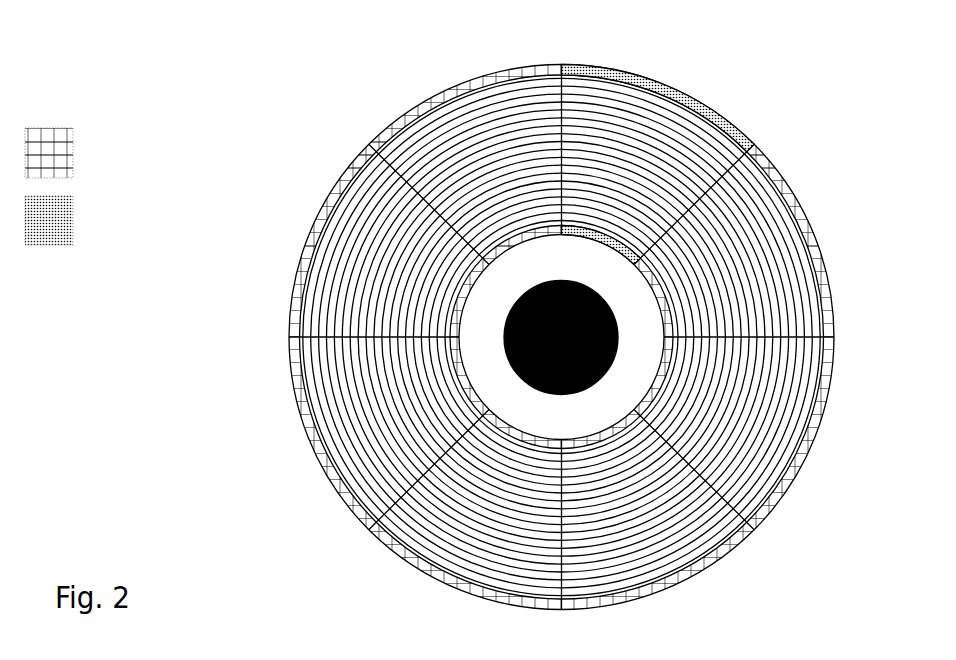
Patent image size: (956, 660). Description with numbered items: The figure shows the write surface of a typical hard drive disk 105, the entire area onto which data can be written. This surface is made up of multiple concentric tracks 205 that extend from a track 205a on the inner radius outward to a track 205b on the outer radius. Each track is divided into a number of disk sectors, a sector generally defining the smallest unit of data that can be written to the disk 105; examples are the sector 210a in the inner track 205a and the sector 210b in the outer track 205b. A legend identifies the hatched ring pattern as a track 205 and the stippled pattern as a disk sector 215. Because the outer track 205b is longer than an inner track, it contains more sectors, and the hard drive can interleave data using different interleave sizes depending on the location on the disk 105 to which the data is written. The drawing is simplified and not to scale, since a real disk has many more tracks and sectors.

The disk 105 is at (558, 321).
The concentric tracks 205 is at (98, 153).
The track on the inner radius 205a is at (561, 337).
The track on the outer radius 205b is at (606, 317).
The sector in track 205a 210a is at (577, 235).
The sector in track 205b 210b is at (665, 82).
The disk sector 215 is at (99, 220).